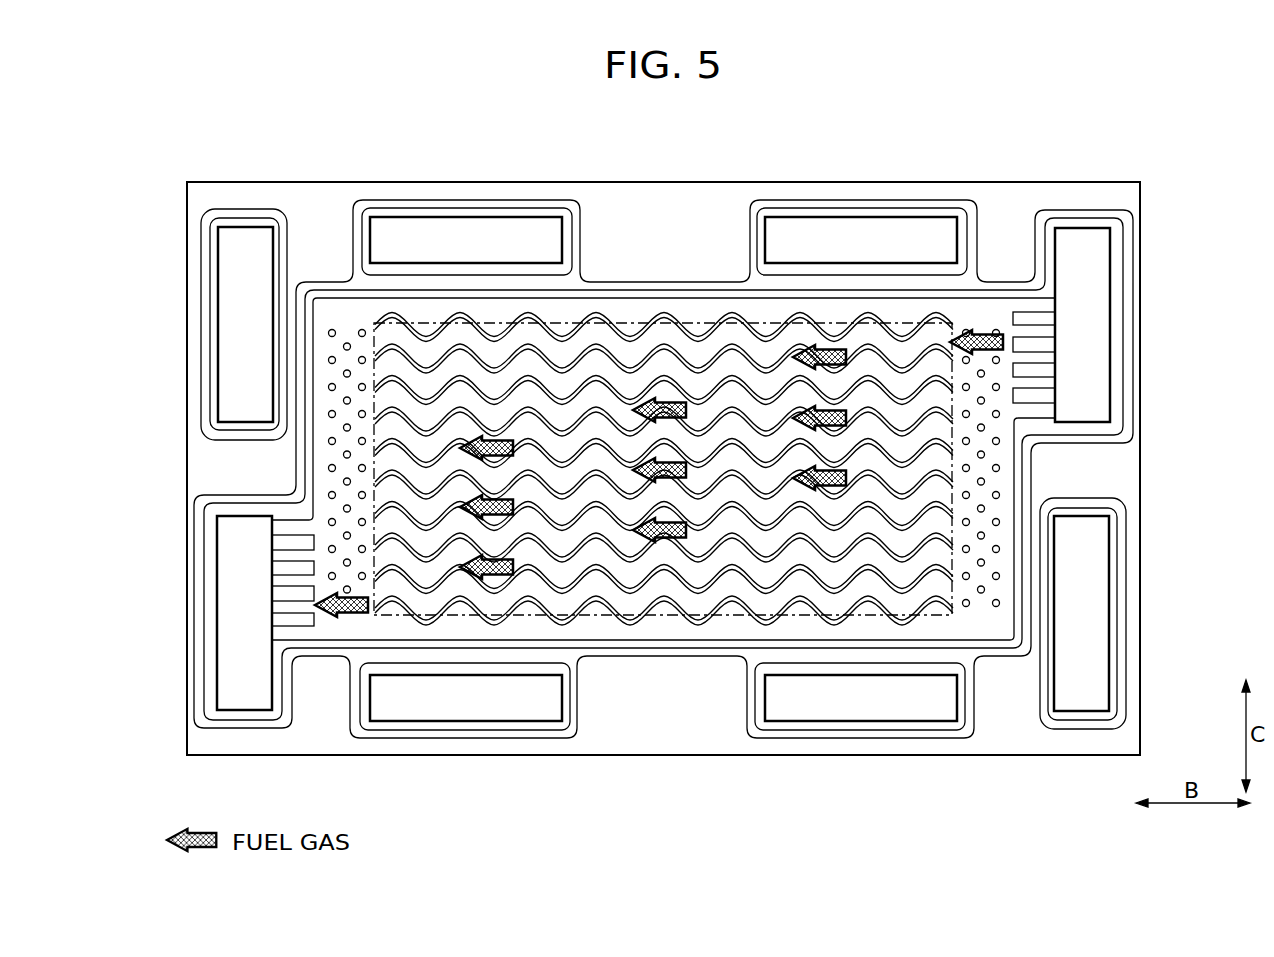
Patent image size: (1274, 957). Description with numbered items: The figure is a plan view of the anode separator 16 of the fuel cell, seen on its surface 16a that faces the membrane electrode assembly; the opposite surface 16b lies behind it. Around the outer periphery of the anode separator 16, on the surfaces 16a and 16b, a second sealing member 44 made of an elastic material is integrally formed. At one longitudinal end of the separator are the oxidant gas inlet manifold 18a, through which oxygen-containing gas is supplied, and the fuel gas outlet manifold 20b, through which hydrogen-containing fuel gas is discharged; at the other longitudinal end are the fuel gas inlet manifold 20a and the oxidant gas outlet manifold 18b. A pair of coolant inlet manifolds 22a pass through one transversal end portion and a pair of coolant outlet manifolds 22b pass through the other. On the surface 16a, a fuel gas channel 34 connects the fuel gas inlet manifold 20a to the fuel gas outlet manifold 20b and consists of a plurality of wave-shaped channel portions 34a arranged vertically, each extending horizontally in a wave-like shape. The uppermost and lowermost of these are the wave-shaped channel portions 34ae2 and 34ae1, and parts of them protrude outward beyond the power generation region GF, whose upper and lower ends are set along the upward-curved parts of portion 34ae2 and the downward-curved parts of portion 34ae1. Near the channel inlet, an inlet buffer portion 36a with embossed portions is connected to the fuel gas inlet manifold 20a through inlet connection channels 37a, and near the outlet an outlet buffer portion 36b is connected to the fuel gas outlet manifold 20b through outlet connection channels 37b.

The second sealing member 44 is at (254, 182).
The anode separator 16 is at (1140, 131).
The surface 16a is at (1072, 192).
The surface 16b is at (1128, 197).
The coolant inlet manifolds 22a is at (386, 230).
The coolant outlet manifolds 22b is at (786, 230).
The oxidant gas inlet manifold 18a is at (224, 262).
The oxidant gas outlet manifold 18b is at (1104, 634).
The fuel gas inlet manifold 20a is at (1104, 262).
The fuel gas outlet manifold 20b is at (222, 612).
The fuel gas channel 34 is at (659, 424).
The wave-shaped channel portions 34a is at (664, 473).
The wave-shaped channel portion 34ae1 is at (628, 608).
The wave-shaped channel portion 34ae2 is at (707, 322).
The inlet buffer portion 36a is at (985, 565).
The outlet buffer portion 36b is at (359, 387).
The inlet connection channels 37a is at (1047, 383).
The outlet connection channels 37b is at (275, 584).
The power generation region GF is at (722, 620).